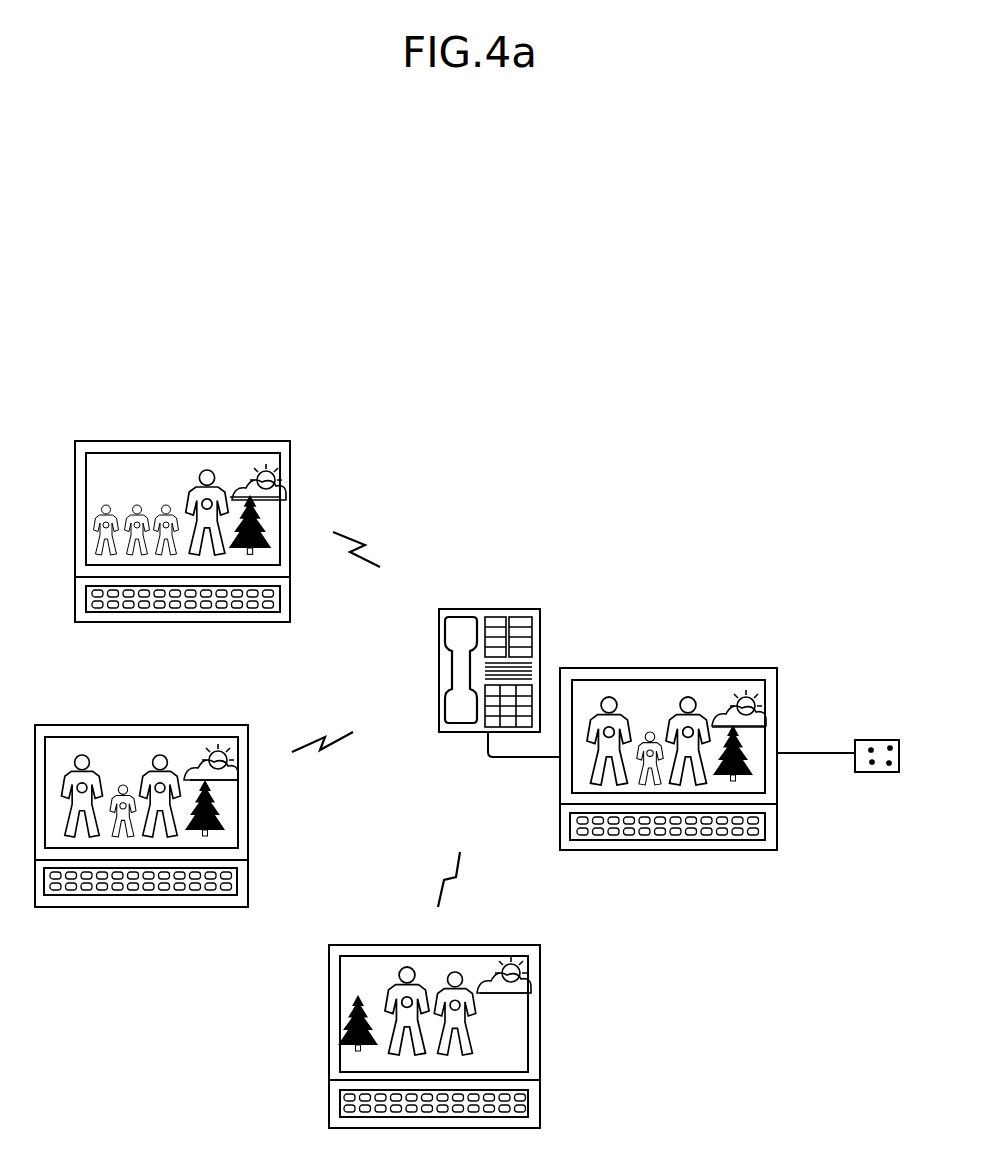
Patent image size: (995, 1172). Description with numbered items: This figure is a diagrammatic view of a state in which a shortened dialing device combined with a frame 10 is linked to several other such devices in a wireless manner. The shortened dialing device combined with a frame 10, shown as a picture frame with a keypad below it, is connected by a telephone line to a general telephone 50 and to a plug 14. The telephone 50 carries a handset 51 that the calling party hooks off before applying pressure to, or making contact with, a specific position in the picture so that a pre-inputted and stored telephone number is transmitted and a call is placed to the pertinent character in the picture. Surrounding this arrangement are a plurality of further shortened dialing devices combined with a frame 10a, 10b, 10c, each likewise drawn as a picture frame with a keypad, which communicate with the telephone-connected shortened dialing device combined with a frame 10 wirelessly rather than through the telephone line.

The shortened dialing device combined with a frame 10 is at (660, 850).
The shortened dialing device combined with a frame 10a is at (140, 428).
The shortened dialing device combined with a frame 10b is at (118, 712).
The shortened dialing device combined with a frame 10c is at (395, 935).
The plug 14 is at (875, 772).
The telephone 50 is at (500, 590).
The handset 51 is at (460, 632).